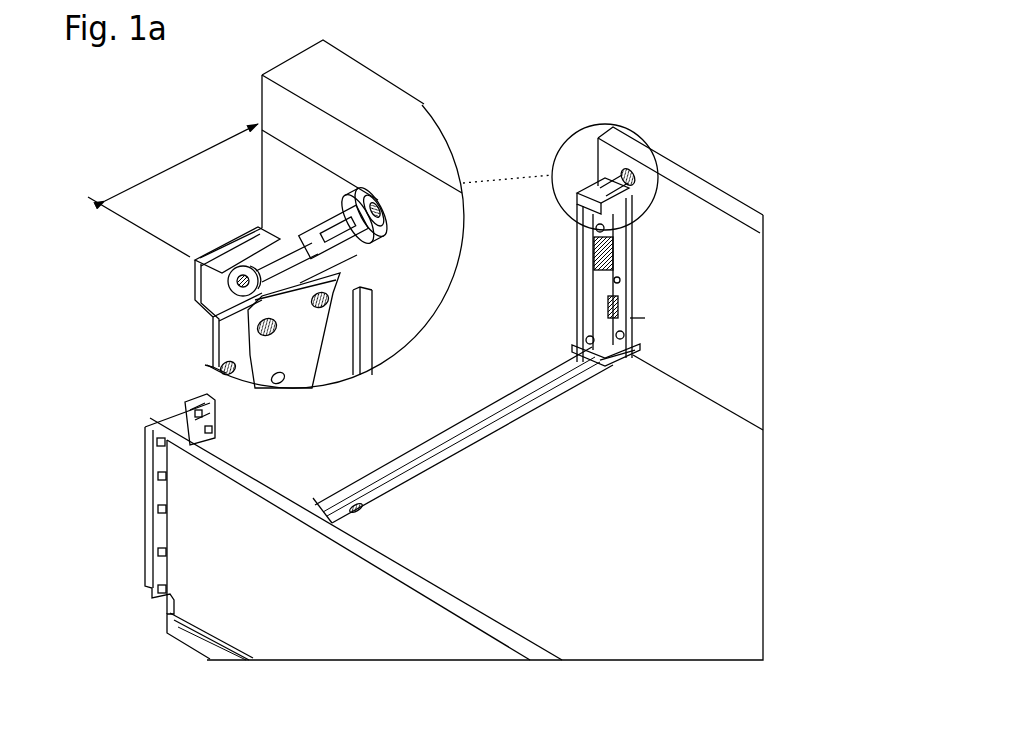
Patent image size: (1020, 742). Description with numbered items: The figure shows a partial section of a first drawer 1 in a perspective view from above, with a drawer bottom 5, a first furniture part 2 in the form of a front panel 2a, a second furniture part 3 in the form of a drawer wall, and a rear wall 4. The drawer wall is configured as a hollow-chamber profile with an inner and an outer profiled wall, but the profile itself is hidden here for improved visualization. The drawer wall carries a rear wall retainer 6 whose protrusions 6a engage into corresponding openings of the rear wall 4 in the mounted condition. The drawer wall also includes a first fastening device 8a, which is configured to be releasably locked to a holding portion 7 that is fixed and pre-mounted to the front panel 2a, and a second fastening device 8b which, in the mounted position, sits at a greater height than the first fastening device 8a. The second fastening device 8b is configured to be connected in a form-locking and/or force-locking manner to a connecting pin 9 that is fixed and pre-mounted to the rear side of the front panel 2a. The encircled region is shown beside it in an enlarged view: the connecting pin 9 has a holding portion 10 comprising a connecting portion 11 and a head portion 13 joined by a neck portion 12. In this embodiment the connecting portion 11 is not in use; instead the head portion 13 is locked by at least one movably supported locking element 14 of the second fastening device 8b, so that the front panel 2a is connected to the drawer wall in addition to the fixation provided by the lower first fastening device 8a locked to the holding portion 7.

The drawer 1 is at (752, 170).
The first furniture part 2 is at (775, 327).
The front panel 2a is at (385, 103).
The second furniture part 3 is at (315, 483).
The rear wall 4 is at (365, 643).
The drawer bottom 5 is at (622, 549).
The rear wall retainer 6 is at (187, 412).
The protrusions 6a is at (168, 476).
The holding portion 7 is at (630, 320).
The first fastening device 8a is at (607, 367).
The second fastening device 8b is at (572, 228).
The connecting pin 9 is at (375, 200).
The holding portion 10 is at (173, 190).
The connecting portion 11 is at (370, 232).
The neck portion 12 is at (290, 253).
The head portion 13 is at (233, 278).
The locking element 14 is at (282, 342).